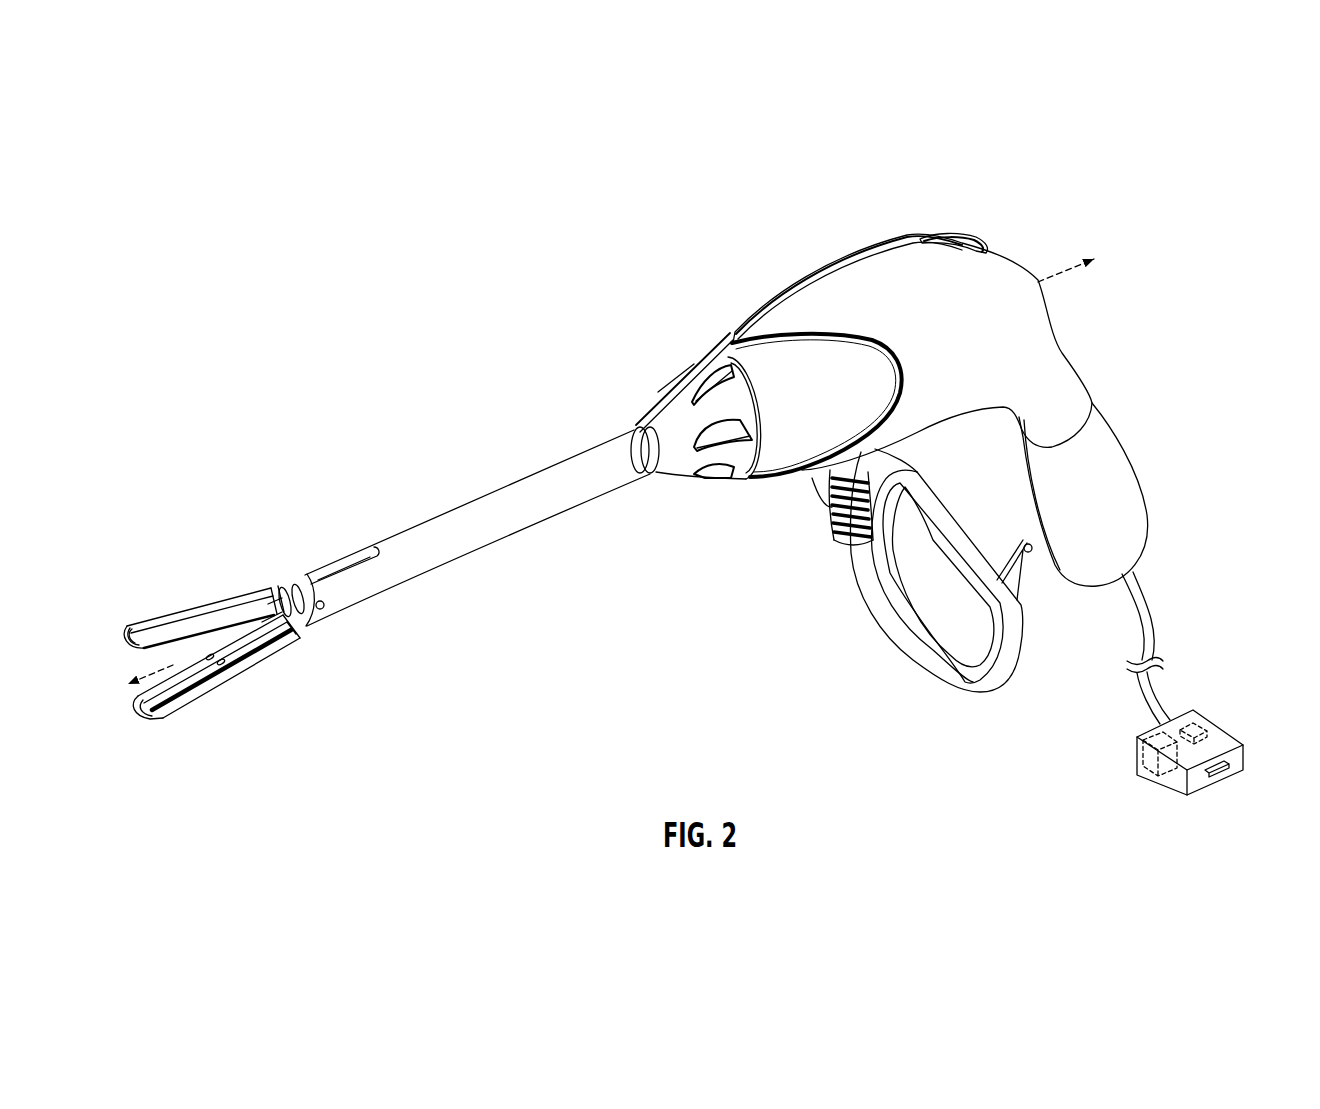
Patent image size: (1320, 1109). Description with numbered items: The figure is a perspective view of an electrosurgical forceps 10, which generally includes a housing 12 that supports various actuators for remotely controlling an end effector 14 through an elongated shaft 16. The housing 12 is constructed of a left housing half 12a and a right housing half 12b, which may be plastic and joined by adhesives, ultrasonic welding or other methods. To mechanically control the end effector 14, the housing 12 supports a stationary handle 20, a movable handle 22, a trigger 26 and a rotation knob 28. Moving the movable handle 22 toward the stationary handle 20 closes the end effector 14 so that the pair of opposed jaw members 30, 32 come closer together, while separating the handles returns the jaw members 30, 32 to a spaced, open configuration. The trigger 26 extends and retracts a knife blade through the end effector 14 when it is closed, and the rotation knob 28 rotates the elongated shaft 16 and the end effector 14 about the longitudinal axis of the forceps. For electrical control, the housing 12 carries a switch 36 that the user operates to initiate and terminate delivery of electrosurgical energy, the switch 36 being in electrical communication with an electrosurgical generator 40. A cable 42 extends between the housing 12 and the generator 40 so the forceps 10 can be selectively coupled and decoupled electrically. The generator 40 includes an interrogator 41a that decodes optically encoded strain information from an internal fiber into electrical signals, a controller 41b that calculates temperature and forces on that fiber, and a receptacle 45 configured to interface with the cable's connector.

The electrosurgical forceps 10 is at (622, 325).
The housing 12 is at (766, 281).
The left housing half 12a is at (836, 284).
The right housing half 12b is at (868, 248).
The end effector 14 is at (241, 570).
The elongated shaft 16 is at (484, 494).
The stationary handle 20 is at (1113, 437).
The movable handle 22 is at (1023, 650).
The trigger 26 is at (835, 503).
The rotation knob 28 is at (669, 410).
The jaw member 30 is at (188, 592).
The jaw member 32 is at (238, 687).
The switch 36 is at (957, 237).
The electrosurgical generator 40 is at (1215, 728).
The interrogator 41a is at (1148, 765).
The controller 41b is at (1193, 718).
The cable 42 is at (1148, 603).
The receptacle 45 is at (1225, 771).